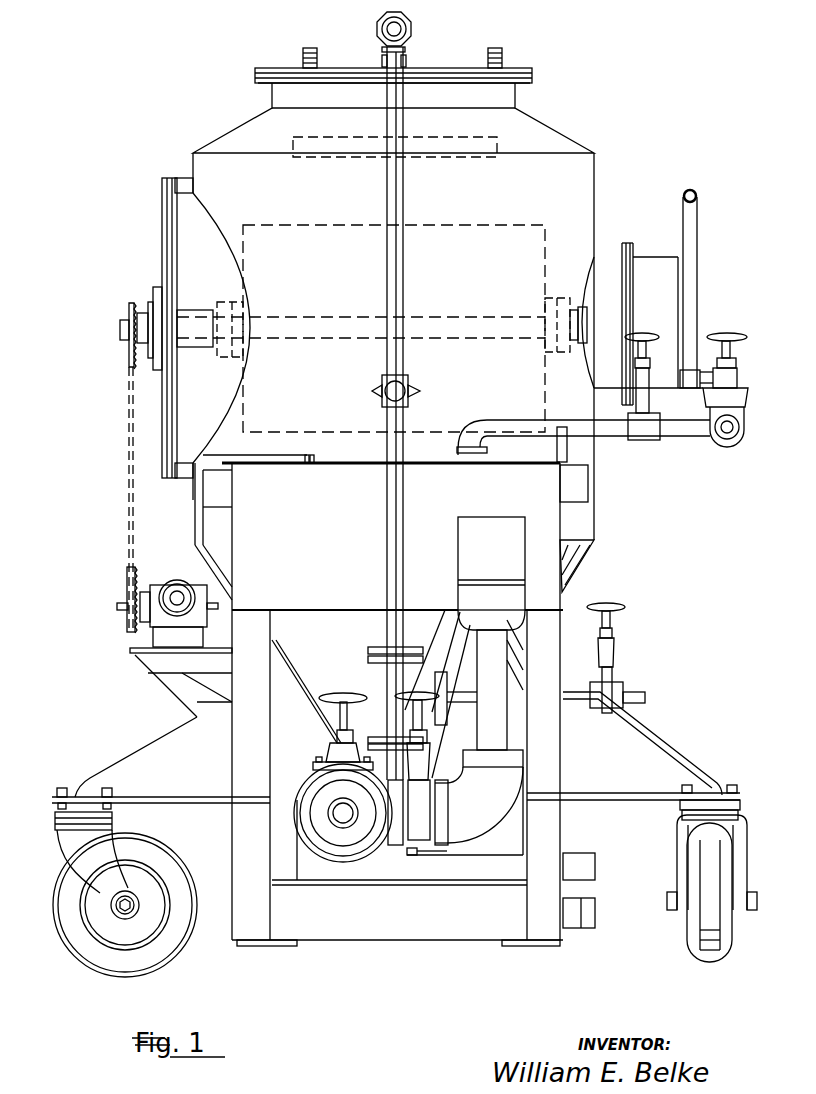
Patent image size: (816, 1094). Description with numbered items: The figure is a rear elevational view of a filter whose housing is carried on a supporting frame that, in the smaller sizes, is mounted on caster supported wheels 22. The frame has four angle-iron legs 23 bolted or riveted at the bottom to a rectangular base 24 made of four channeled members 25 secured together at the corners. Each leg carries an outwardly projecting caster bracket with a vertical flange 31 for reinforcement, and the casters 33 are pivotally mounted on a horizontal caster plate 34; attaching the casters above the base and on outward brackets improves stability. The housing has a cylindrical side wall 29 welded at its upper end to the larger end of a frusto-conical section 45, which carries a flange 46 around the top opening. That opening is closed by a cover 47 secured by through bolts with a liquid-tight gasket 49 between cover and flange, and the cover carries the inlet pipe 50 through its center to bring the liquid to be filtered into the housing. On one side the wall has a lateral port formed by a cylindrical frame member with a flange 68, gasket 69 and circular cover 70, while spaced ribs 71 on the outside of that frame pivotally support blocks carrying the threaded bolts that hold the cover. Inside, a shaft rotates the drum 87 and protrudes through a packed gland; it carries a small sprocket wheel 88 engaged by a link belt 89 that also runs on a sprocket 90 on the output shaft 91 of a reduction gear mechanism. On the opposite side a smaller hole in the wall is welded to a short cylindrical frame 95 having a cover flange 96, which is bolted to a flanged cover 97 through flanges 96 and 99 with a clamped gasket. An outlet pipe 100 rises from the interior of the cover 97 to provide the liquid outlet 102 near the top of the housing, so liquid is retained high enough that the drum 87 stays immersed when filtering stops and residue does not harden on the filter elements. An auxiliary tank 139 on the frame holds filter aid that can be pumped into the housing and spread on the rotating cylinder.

The caster supported wheels 22 is at (673, 853).
The legs 23 is at (242, 685).
The rectangular base 24 is at (400, 930).
The channeled members 25 is at (320, 936).
The cylindrical side wall 29 is at (590, 185).
The vertical flange 31 is at (136, 755).
The casters 33 is at (74, 852).
The horizontal caster plate 34 is at (113, 822).
The frusto-conical section 45 is at (546, 128).
The flange 46 is at (260, 85).
The cover 47 is at (268, 68).
The liquid-tight gasket 49 is at (256, 76).
The inlet pipe 50 is at (396, 22).
The flange 68 is at (163, 208).
The gasket 69 is at (167, 223).
The circular cover 70 is at (172, 240).
The spaced ribs 71 is at (183, 182).
The drum 87 is at (283, 232).
The small sprocket wheel 88 is at (121, 330).
The link belt 89 is at (128, 360).
The sprocket 90 is at (134, 584).
The output shaft 91 is at (117, 607).
The short cylindrical frame 95 is at (610, 259).
The cover flange 96 is at (622, 243).
The flanged cover 97 is at (655, 258).
The flange 99 is at (634, 243).
The outlet pipe 100 is at (697, 278).
The liquid outlet 102 is at (697, 194).
The auxiliary tank 139 is at (553, 515).